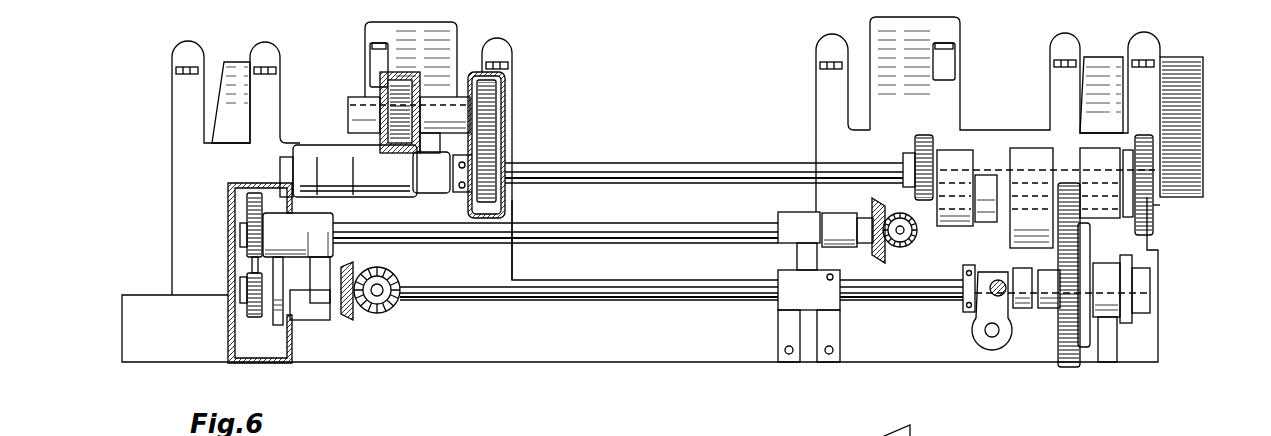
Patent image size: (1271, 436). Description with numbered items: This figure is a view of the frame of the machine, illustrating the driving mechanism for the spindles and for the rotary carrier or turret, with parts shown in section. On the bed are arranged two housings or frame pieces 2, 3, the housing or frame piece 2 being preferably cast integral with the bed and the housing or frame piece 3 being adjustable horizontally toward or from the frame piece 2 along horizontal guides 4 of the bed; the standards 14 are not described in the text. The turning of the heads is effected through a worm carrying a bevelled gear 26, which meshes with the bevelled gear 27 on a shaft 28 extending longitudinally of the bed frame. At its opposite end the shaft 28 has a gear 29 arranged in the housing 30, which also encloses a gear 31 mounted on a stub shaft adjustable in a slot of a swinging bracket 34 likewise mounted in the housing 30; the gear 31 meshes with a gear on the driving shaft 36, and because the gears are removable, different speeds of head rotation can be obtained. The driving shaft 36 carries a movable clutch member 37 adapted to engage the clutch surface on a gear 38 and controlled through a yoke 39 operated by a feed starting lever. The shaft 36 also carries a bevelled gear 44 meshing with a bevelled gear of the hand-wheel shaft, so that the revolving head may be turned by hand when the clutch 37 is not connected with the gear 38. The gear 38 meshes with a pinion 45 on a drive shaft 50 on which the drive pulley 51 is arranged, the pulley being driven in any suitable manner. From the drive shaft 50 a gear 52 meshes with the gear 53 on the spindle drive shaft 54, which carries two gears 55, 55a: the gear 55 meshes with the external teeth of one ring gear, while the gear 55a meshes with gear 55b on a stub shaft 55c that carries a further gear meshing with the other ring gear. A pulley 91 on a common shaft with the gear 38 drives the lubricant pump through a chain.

The housing or frame piece 2 is at (830, 152).
The housing or frame piece 3 is at (510, 215).
The horizontal guides 4 is at (652, 285).
The standards (posts) 14 is at (216, 80).
The bevelled gear 26 is at (907, 250).
The bevelled gear 27 is at (880, 262).
The shaft 28 is at (675, 222).
The gear 29 is at (247, 200).
The housing 30 is at (227, 315).
The gear 31 is at (256, 318).
The swinging bracket 34 is at (277, 325).
The driving shaft 36 is at (600, 298).
The movable clutch member 37 is at (1000, 272).
The gear 38 is at (1074, 364).
The yoke 39 is at (1002, 312).
The bevelled gear 44 is at (352, 320).
The pinion 45 is at (383, 318).
The drive shaft 50 is at (984, 202).
The drive pulley 51 is at (1028, 153).
The gear 52 is at (1150, 210).
The gear 53 is at (1155, 153).
The spindle drive shaft 54 is at (708, 170).
The gear 55 is at (510, 155).
The gear 55a is at (418, 76).
The gear 55b is at (502, 97).
The stub shaft 55c is at (437, 96).
The pulley 91 is at (1243, 310).